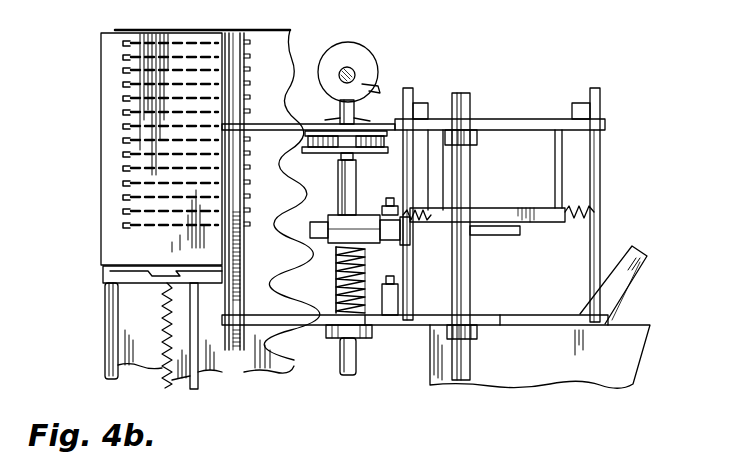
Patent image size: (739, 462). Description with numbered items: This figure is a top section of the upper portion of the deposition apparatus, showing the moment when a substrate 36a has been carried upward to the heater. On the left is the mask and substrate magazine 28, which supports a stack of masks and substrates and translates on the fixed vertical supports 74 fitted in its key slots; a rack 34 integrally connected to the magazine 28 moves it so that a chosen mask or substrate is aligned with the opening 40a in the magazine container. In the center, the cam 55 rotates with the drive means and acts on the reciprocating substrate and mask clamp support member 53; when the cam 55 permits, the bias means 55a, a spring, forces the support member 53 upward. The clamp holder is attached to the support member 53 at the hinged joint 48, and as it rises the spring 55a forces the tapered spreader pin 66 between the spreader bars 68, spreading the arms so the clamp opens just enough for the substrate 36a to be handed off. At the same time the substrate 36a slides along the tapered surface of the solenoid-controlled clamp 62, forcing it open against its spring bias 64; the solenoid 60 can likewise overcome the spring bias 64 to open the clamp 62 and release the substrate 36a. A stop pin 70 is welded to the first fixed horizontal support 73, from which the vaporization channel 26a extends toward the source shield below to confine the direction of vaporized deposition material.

The mask and substrate magazine 28 is at (101, 181).
The rack 34 is at (200, 390).
The opening 40a is at (292, 254).
The cam 55 is at (388, 48).
The substrate and mask clamp support member 53 is at (345, 184).
The hinged joint 48 is at (312, 224).
The spreader pin 66 is at (390, 200).
The spreader bars 68 is at (390, 236).
The bias means 55a is at (340, 283).
The stop pin 70 is at (397, 300).
The solenoid-controlled clamp 62 is at (601, 181).
The solenoid 60 is at (420, 103).
The fixed vertical supports 74 is at (470, 284).
The spring bias 64 is at (466, 205).
The substrate 36a is at (530, 235).
The first fixed horizontal support 73 is at (535, 318).
The vaporization channel 26a is at (640, 352).